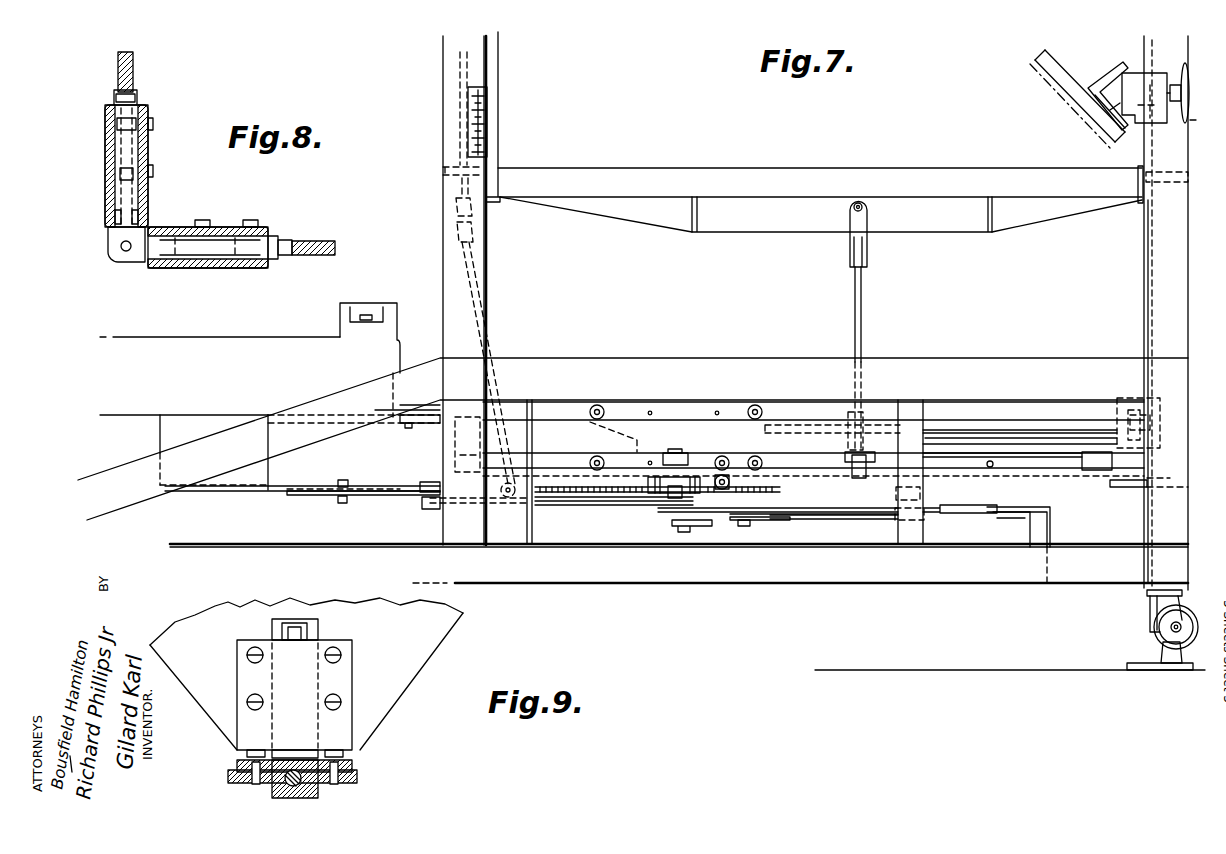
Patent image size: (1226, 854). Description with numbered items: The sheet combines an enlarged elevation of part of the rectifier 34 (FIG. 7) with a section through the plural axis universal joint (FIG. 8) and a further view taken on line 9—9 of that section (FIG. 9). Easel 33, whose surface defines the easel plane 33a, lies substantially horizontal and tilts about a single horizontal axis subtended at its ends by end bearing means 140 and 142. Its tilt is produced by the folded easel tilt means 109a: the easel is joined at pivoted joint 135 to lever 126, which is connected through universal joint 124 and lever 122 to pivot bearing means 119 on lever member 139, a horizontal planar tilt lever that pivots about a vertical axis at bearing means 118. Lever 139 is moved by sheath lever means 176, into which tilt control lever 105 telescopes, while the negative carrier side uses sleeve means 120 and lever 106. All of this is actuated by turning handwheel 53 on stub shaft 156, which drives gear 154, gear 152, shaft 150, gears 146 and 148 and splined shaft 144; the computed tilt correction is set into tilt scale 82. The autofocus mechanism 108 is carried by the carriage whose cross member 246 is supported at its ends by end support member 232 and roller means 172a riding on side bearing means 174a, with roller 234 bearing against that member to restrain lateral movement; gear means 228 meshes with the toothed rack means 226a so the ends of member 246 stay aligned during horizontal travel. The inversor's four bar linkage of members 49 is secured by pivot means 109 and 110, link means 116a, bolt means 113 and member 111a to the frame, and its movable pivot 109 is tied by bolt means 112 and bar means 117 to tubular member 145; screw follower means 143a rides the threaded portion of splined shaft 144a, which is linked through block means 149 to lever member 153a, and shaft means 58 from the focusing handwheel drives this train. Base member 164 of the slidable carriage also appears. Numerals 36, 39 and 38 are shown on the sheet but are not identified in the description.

In FIG. 8, the section line 9— 9 is at (202, 316).
In FIG. 8, the lever 126 is at (116, 70).
In FIG. 7, the lever 126 is at (853, 292).
In FIG. 9, the lever 126 is at (364, 705).
In FIG. 8, the universal joint 124 is at (112, 252).
In FIG. 7, the universal joint 124 is at (868, 442).
In FIG. 9, the universal joint 124 is at (305, 745).
In FIG. 8, the lever 122 is at (316, 228).
In FIG. 7, the lever 122 is at (975, 430).
In FIG. 9, the lever 122 is at (358, 780).
In FIG. 7, the rectifier 34 is at (438, 222).
In FIG. 7, the tilt scale 82 is at (490, 114).
In FIG. 7, the shaft means 58 is at (458, 103).
In FIG. 7, the end bearing means 142 is at (445, 165).
In FIG. 7, the base member 164 is at (366, 303).
In FIG. 7, the easel 33 is at (895, 176).
In FIG. 7, the easel plane 33a is at (750, 170).
In FIG. 7, the pivoted joint 135 is at (850, 207).
In FIG. 7, the easel tilt means 109a is at (850, 330).
In FIG. 7, the gear 154 is at (1145, 75).
In FIG. 7, the gear means 152 is at (1115, 110).
In FIG. 7, the stub shaft 156 is at (1150, 85).
In FIG. 7, the handwheel 53 is at (1178, 125).
In FIG. 7, the end bearing means 140 is at (1172, 182).
In FIG. 7, the frame 36 is at (1158, 240).
In FIG. 7, the shaft means 150 is at (1140, 283).
In FIG. 7, the tubular member 145 is at (158, 438).
In FIG. 7, the sleeve means 120 is at (432, 410).
In FIG. 7, the lever 106 is at (398, 428).
In FIG. 7, the block means 149 is at (428, 480).
In FIG. 7, the lever member 153a is at (398, 490).
In FIG. 7, the bar means 117 is at (268, 498).
In FIG. 7, the bolt means 112 is at (345, 503).
In FIG. 7, the pivot means 109 is at (432, 510).
In FIG. 7, the end support member 232 is at (686, 408).
In FIG. 7, the roller means 172a is at (602, 406).
In FIG. 7, the side bearing means 174a is at (555, 424).
In FIG. 7, the roller 234 is at (690, 444).
In FIG. 7, the tilt control lever 105 is at (800, 445).
In FIG. 7, the sheath lever means 176 is at (938, 462).
In FIG. 7, the lever member 139 is at (998, 450).
In FIG. 7, the splined shaft 144 is at (1055, 424).
In FIG. 7, the gear means 148 is at (1148, 402).
In FIG. 7, the gear means 146 is at (1128, 425).
In FIG. 7, the pivot bearing means 119 is at (1112, 460).
In FIG. 7, the bearing means 118 is at (1135, 490).
In FIG. 7, the pivot means 110 is at (905, 492).
In FIG. 7, the link means 116a is at (960, 500).
In FIG. 7, the member 111a is at (1035, 510).
In FIG. 7, the bolt means 113 is at (968, 515).
In FIG. 7, the linkage members 49 is at (540, 502).
In FIG. 7, the autofocus mechanism 108 is at (600, 514).
In FIG. 7, the cross member 246 is at (650, 495).
In FIG. 7, the gear means 228 is at (727, 500).
In FIG. 7, the splined shaft 144a is at (760, 520).
In FIG. 7, the rack means 226a is at (816, 508).
In FIG. 7, the screw follower means 143a is at (684, 534).
In FIG. 7, the caster 39 is at (1150, 626).
In FIG. 7, the foot 38 is at (1160, 663).